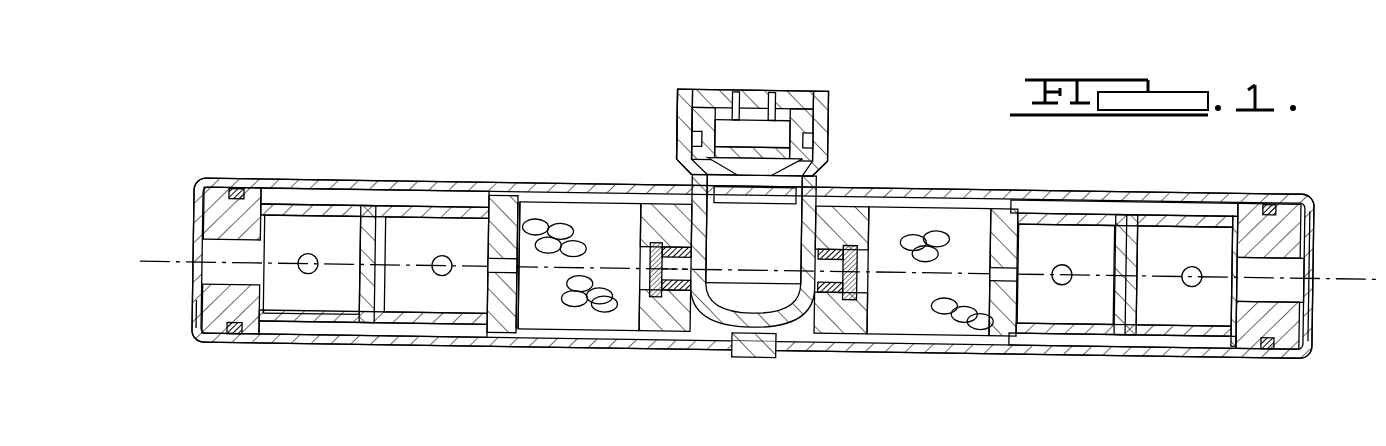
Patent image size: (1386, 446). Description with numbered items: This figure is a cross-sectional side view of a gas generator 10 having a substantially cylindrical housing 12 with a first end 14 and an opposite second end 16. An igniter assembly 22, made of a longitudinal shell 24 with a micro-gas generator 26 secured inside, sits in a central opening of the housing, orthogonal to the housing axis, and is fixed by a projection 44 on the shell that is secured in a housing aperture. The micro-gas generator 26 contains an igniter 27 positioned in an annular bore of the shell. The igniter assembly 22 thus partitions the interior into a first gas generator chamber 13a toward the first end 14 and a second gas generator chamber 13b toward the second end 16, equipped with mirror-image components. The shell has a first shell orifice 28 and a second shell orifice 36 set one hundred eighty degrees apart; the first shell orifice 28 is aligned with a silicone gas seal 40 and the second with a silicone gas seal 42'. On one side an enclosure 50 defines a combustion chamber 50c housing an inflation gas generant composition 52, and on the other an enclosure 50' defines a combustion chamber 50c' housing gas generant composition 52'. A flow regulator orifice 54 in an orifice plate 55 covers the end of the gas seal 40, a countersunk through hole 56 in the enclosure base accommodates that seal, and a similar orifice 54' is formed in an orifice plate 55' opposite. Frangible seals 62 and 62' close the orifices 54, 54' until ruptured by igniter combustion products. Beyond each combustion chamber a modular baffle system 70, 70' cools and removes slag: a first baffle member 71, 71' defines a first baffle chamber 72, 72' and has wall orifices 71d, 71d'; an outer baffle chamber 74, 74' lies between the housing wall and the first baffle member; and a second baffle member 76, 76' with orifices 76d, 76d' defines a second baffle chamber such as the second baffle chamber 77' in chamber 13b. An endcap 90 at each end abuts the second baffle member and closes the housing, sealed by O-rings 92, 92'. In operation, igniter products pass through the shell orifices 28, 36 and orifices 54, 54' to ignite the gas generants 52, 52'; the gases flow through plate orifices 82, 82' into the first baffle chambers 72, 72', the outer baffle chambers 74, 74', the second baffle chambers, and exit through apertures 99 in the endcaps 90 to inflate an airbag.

The gas generator 10 is at (356, 111).
The housing 12 is at (280, 342).
The first end 14 is at (226, 343).
The second end 16 is at (1286, 196).
The igniter assembly 22 is at (822, 96).
The shell 24 is at (680, 105).
The micro-gas generator 26 is at (700, 186).
The igniter 27 is at (745, 125).
The first shell orifice 28 is at (718, 258).
The second shell orifice 36 is at (800, 273).
The silicone gas seal 40 is at (652, 244).
The silicone gas seal 42' is at (865, 206).
The projection 44 is at (756, 350).
The enclosure 50 is at (579, 295).
The enclosure 50' is at (929, 305).
The combustion chamber 50c is at (507, 308).
The combustion chamber 50c' is at (1013, 244).
The inflation gas generant composition 52 is at (554, 185).
The inflation gas generant composition 52' is at (946, 199).
The orifice 54 is at (640, 260).
The orifice 54' is at (870, 214).
The orifice plate 55 is at (712, 285).
The orifice plate 55' is at (864, 293).
The countersunk through hole 56 is at (645, 302).
The frangible seal 62 is at (593, 300).
The frangible seal 62' is at (938, 303).
The modular baffle system 70 is at (374, 215).
The modular baffle system 70' is at (1120, 305).
The first baffle member 71 is at (485, 286).
The first baffle member 71' is at (1123, 359).
The orifices 71d is at (474, 210).
The orifices 71d' is at (1055, 259).
The first baffle chamber 72 is at (436, 225).
The first baffle chamber 72' is at (1066, 243).
The outer baffle chamber 74 is at (371, 163).
The outer baffle chamber 74' is at (1122, 365).
The second baffle member 76 is at (321, 316).
The second baffle member 76' is at (1137, 189).
The orifices 76d is at (293, 340).
The orifices 76d' is at (1184, 276).
The second baffle chamber 77' is at (1299, 281).
The plate orifice 82 is at (474, 280).
The plate orifice 82' is at (1035, 289).
The endcap 90 is at (217, 212).
The O-ring 92 is at (211, 228).
The O-ring 92' is at (1283, 305).
The apertures 99 is at (1290, 294).
The first gas generator chamber 13a is at (413, 330).
The second gas generator chamber 13b is at (1128, 201).